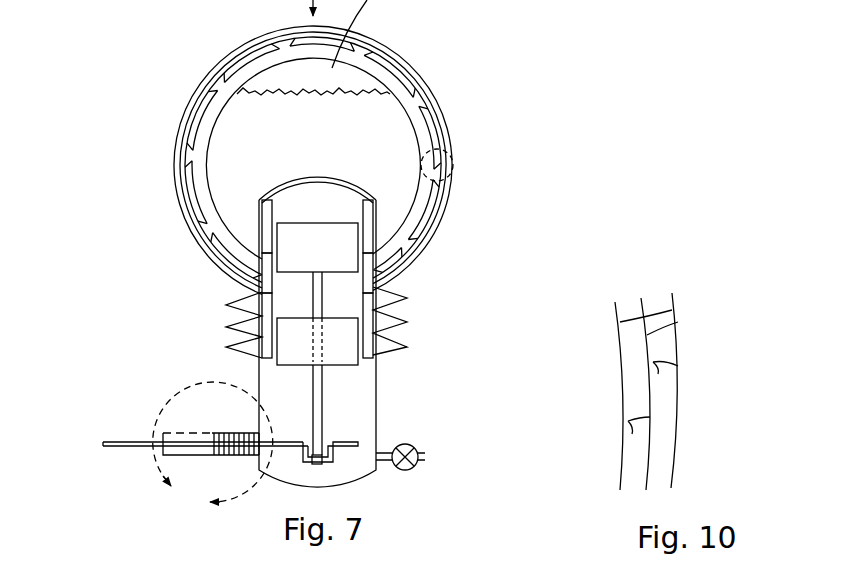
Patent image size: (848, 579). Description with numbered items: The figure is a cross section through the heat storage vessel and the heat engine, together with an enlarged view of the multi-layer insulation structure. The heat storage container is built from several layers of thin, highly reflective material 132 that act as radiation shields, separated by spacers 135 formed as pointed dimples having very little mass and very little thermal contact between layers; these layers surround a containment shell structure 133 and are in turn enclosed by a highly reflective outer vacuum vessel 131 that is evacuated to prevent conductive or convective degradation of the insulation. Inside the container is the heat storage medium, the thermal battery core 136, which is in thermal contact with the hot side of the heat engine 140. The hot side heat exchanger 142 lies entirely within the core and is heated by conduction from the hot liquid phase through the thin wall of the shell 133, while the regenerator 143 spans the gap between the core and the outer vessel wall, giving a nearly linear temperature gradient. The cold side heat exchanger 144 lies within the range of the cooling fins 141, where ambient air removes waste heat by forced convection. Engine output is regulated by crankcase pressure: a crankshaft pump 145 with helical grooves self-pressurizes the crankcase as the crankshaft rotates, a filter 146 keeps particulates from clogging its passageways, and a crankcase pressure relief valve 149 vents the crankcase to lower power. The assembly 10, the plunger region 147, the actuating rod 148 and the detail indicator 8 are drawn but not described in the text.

In FIG. 7, the lamp assembly 10 is at (455, 152).
In FIG. 7, the outer vacuum vessel 131 is at (424, 80).
In FIG. 7, the highly reflective material layers 132 is at (430, 132).
In FIG. 10, the highly reflective material layers 132 is at (678, 340).
In FIG. 7, the containment shell structure 133 is at (230, 115).
In FIG. 7, the spacers 135 is at (433, 212).
In FIG. 10, the spacers 135 is at (656, 365).
In FIG. 7, the thermal battery core 136 is at (283, 135).
In FIG. 7, the heat engine 140 is at (385, 425).
In FIG. 7, the cooling fins 141 is at (404, 299).
In FIG. 7, the hot side heat exchanger 142 is at (262, 226).
In FIG. 7, the regenerator 143 is at (263, 275).
In FIG. 7, the cold side heat exchanger 144 is at (258, 333).
In FIG. 7, the crankshaft pump 145 is at (235, 432).
In FIG. 7, the filter 146 is at (185, 431).
In FIG. 7, the plunger assembly 147 is at (347, 427).
In FIG. 7, the actuating rod 148 is at (123, 441).
In FIG. 7, the crankcase pressure relief valve 149 is at (420, 470).
In FIG. 7, the detail view indicator 8 is at (213, 443).